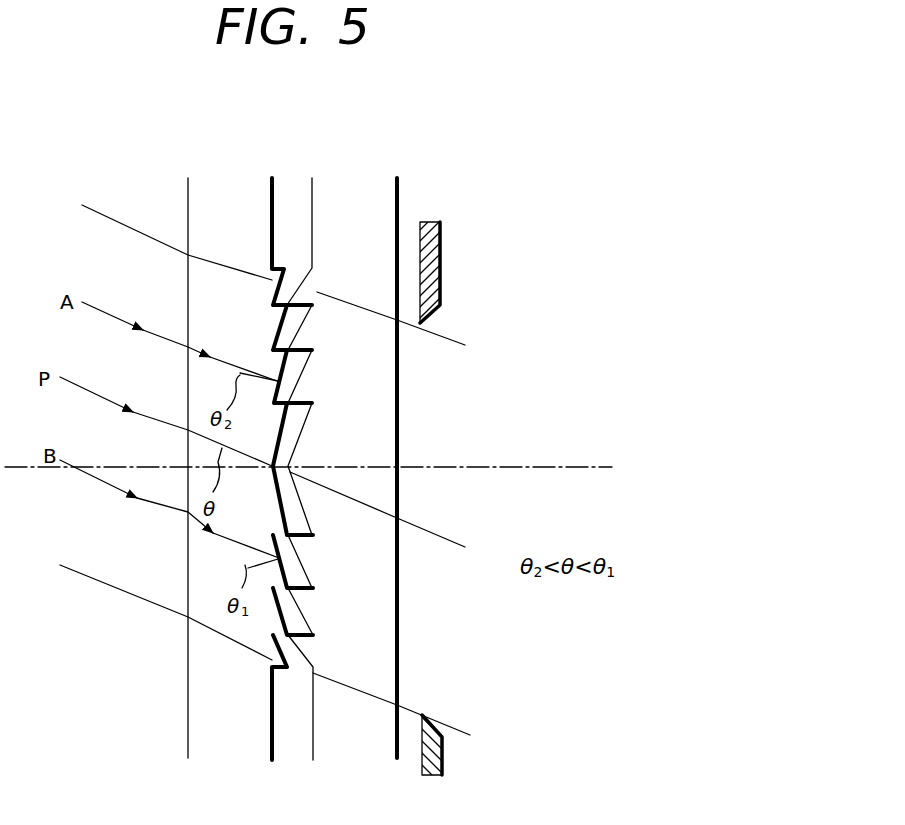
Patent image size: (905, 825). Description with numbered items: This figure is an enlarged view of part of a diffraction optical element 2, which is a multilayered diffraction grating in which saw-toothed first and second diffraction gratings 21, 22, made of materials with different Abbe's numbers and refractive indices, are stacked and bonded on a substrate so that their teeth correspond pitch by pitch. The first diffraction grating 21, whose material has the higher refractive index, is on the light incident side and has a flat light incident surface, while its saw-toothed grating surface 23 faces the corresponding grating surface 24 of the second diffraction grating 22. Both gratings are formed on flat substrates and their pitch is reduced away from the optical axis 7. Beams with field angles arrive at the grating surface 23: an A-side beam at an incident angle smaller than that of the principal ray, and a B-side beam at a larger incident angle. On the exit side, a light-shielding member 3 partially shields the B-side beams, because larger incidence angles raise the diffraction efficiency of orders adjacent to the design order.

The diffraction optical element 2 is at (417, 121).
The first diffraction grating 21 is at (229, 205).
The second diffraction grating 22 is at (351, 205).
The grating surface 23 is at (297, 445).
The grating surface 24 is at (312, 425).
The light shielding member 3 is at (430, 270).
The optical axis 7 is at (598, 464).